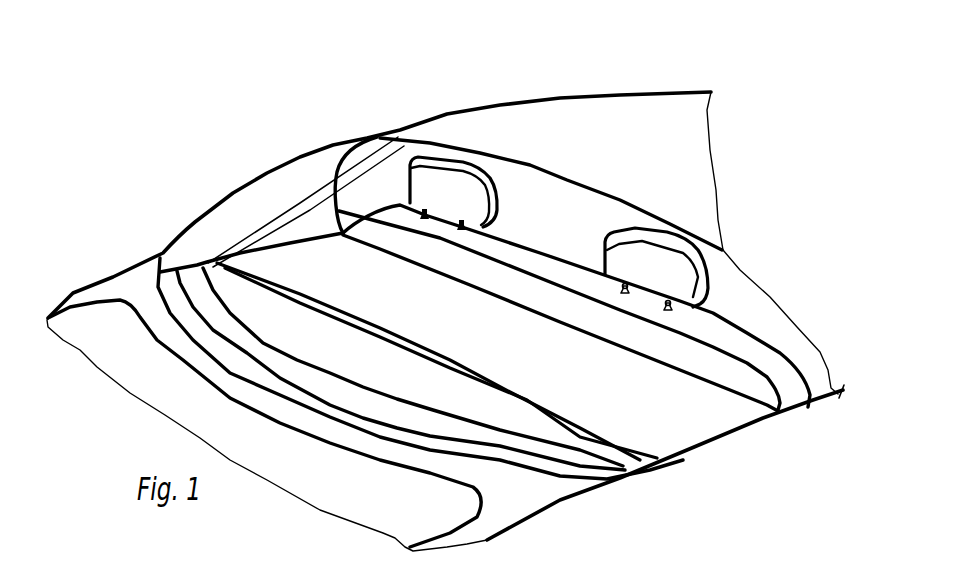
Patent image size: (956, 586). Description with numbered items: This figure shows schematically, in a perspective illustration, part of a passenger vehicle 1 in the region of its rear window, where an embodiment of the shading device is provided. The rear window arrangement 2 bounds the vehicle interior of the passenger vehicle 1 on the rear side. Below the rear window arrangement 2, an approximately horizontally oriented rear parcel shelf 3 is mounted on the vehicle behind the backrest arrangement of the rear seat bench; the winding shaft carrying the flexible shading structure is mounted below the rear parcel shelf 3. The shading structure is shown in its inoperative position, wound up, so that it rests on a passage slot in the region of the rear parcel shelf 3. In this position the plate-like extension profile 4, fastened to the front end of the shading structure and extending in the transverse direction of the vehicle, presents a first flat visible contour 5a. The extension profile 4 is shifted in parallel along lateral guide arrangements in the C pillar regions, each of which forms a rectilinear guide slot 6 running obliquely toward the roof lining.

The passenger vehicle 1 is at (463, 99).
The rear window arrangement 2 is at (551, 216).
The rear parcel shelf 3 is at (699, 421).
The extension profile 4 is at (460, 370).
The first flat visible contour 5a is at (383, 368).
The rectilinear guide slot 6 is at (283, 210).